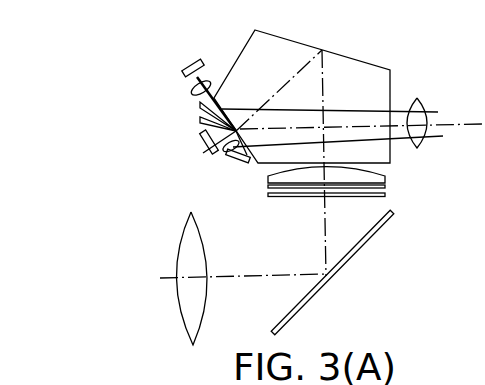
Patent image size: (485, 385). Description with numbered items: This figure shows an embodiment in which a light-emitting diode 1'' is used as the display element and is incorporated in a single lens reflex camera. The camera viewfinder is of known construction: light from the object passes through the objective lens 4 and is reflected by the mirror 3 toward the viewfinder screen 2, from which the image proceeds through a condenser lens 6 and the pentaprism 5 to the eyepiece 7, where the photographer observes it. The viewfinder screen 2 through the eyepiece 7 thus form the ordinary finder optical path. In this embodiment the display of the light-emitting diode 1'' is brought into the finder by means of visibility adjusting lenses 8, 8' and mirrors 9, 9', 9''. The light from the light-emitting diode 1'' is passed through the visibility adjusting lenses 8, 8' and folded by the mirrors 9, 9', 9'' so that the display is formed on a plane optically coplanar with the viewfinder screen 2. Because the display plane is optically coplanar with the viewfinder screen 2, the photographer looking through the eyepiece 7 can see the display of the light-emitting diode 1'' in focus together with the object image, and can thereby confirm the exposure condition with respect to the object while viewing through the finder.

The light-emitting diode 1'' is at (196, 103).
The viewfinder screen 2 is at (385, 196).
The mirror 3 is at (310, 303).
The objective lens 4 is at (177, 304).
The pentaprism 5 is at (297, 43).
The condenser lens 6 is at (385, 178).
The eyepiece 7 is at (418, 100).
The visibility adjusting lens 8 is at (184, 89).
The visibility adjusting lens 8' is at (217, 163).
The mirror 9 is at (200, 114).
The mirror 9' is at (194, 133).
The mirror 9'' is at (237, 175).